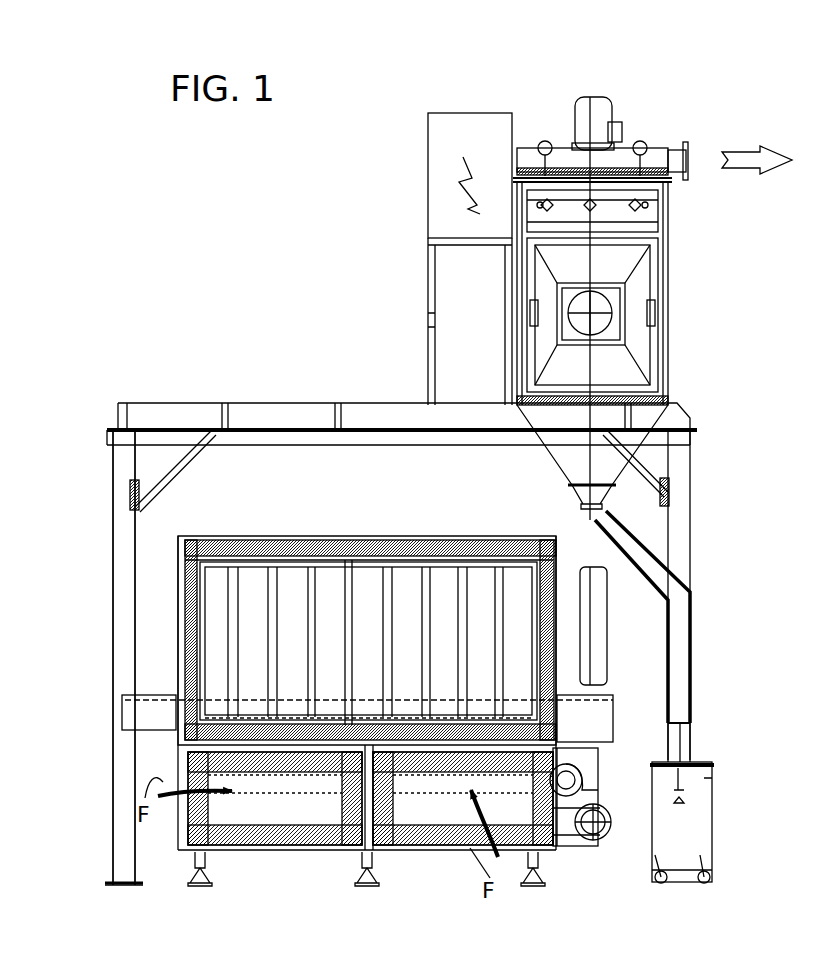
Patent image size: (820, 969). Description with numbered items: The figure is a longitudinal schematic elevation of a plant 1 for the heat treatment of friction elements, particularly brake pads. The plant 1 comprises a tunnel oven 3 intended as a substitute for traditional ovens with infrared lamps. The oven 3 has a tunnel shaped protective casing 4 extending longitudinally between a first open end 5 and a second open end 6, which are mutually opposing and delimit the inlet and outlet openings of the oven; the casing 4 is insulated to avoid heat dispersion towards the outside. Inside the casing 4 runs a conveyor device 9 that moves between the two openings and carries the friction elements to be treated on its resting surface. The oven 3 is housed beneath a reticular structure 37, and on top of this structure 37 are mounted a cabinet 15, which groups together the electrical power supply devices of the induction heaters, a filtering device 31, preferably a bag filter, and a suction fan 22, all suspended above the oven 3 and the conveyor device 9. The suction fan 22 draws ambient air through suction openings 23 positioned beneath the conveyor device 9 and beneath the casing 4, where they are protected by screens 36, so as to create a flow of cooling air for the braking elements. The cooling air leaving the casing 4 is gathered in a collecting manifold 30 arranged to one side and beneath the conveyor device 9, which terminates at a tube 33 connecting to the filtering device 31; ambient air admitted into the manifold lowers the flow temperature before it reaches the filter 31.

The plant 1 is at (243, 318).
The tunnel oven 3 is at (276, 535).
The tunnel shaped protective casing 4 is at (371, 597).
The first open end 5 is at (172, 597).
The second open end 6 is at (563, 654).
The conveyor device 9 is at (158, 728).
The cabinet 15 is at (440, 142).
The suction fan 22 is at (640, 119).
The suction opening 23 is at (275, 810).
The collecting manifold 30 is at (567, 849).
The filtering device 31 is at (668, 284).
The tube 33 is at (680, 678).
The screens 36 is at (366, 858).
The reticular structure 37 is at (273, 403).